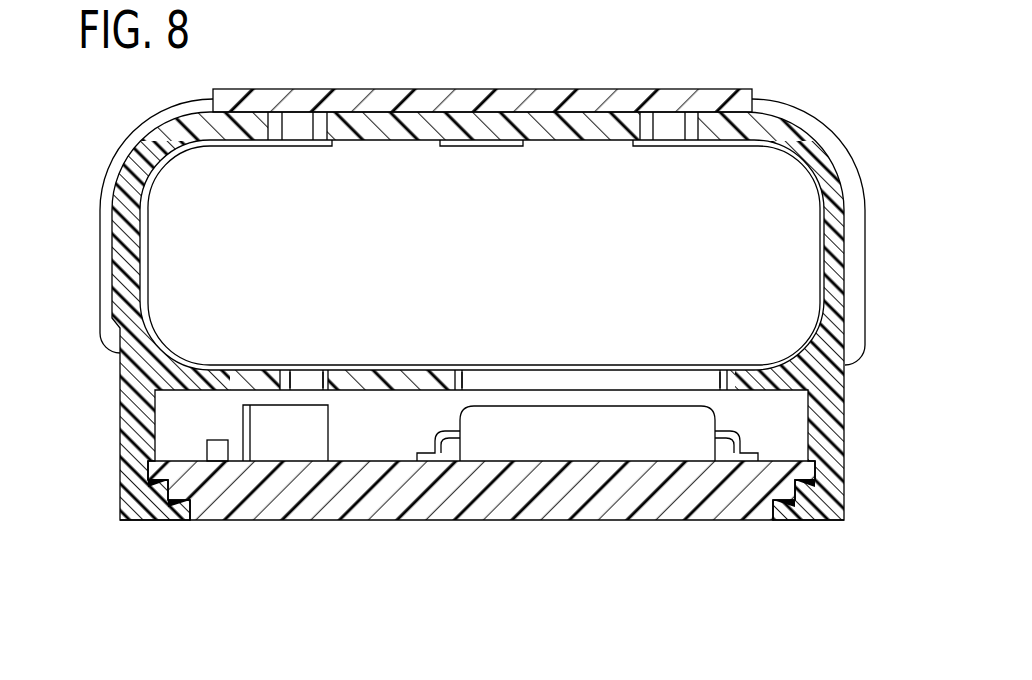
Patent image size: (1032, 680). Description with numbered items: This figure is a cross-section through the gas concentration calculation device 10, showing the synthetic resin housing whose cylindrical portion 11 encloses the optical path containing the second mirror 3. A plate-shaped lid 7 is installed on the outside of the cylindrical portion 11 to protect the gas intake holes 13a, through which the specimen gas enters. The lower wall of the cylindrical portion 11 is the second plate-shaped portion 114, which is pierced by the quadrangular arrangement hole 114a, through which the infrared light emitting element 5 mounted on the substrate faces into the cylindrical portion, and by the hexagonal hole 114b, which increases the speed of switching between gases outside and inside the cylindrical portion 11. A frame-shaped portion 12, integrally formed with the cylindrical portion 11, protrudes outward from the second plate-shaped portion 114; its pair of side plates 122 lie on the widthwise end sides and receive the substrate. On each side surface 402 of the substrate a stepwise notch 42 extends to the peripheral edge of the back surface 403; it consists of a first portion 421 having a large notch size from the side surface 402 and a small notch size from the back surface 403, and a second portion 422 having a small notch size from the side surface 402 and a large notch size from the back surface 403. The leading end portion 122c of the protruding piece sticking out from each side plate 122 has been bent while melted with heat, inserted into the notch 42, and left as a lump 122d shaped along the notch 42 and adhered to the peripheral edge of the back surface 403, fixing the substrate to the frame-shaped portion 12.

The second mirror 3 is at (563, 190).
The infrared light emitting element 5 is at (590, 432).
The plate-shaped lid 7 is at (467, 100).
The gas concentration calculation device 10 is at (474, 333).
The cylindrical portion 11 is at (838, 251).
The frame-shaped portion 12 is at (474, 298).
The opening 13a is at (302, 128).
The notch 42 is at (455, 564).
The second plate-shaped portion 114 is at (390, 375).
The arrangement hole 114a is at (533, 380).
The hexagonal hole 114b is at (303, 380).
The side plate 122 is at (120, 415).
The leading end portion 122c is at (474, 516).
The lump 122d is at (157, 507).
The side surface 402 is at (152, 470).
The back surface 403 is at (645, 520).
The first portion 421 is at (180, 508).
The second portion 422 is at (161, 492).